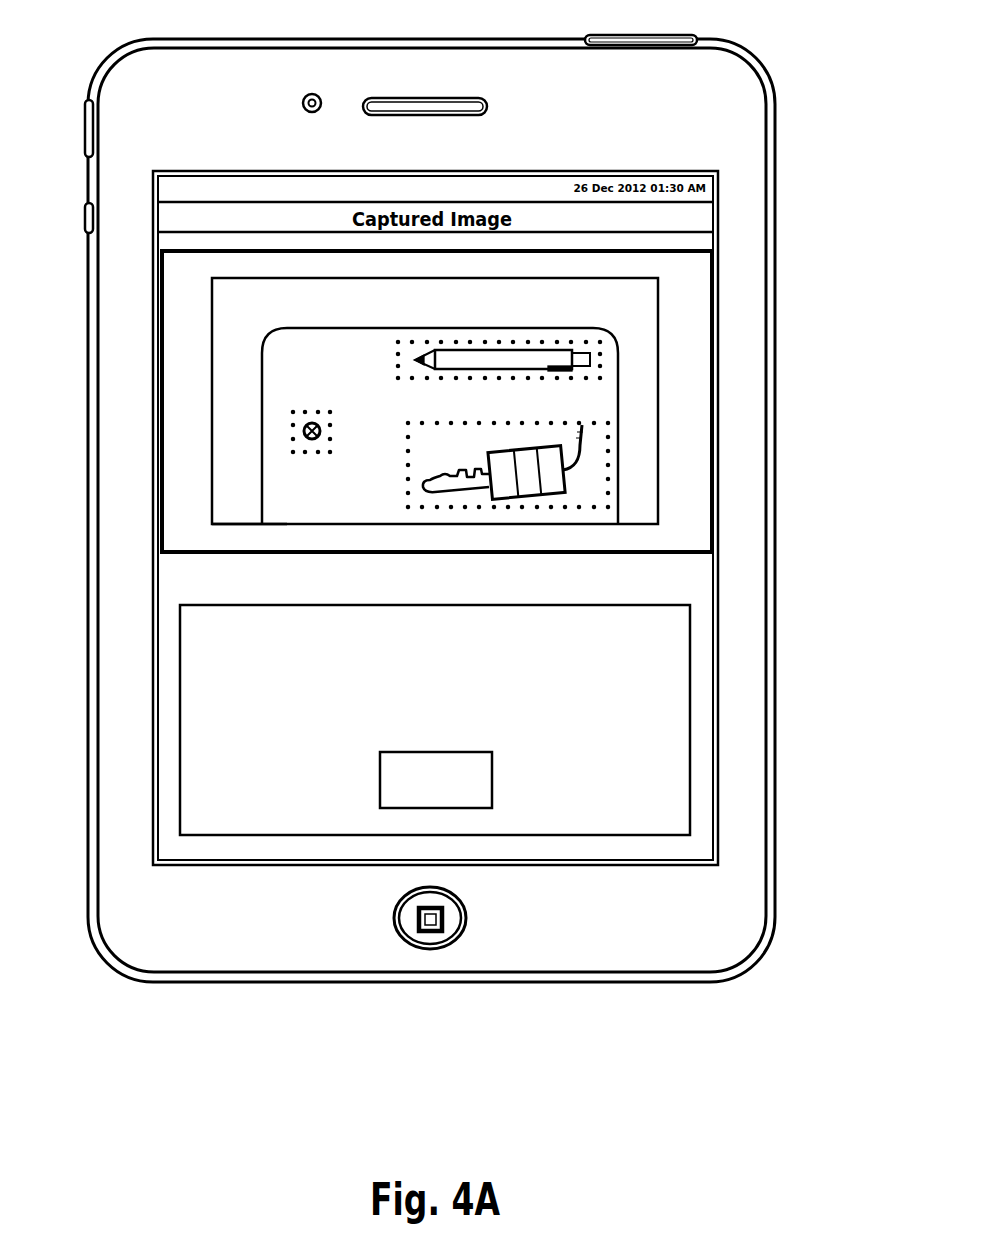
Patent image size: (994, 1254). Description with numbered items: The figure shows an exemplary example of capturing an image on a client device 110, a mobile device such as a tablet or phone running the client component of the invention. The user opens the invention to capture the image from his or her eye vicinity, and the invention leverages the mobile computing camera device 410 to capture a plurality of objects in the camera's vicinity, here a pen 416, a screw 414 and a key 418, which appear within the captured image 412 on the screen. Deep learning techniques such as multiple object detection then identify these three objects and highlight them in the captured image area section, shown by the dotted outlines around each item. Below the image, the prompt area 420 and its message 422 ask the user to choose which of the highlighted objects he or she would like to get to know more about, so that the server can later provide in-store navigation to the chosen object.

The client device 110 is at (729, 42).
The mobile computing camera device 410 is at (312, 94).
The captured image 412 is at (690, 487).
The screw 414 is at (295, 429).
The pen 416 is at (506, 342).
The key 418 is at (503, 507).
The object selection prompt 420 is at (673, 605).
The selection prompt message 422 is at (198, 648).